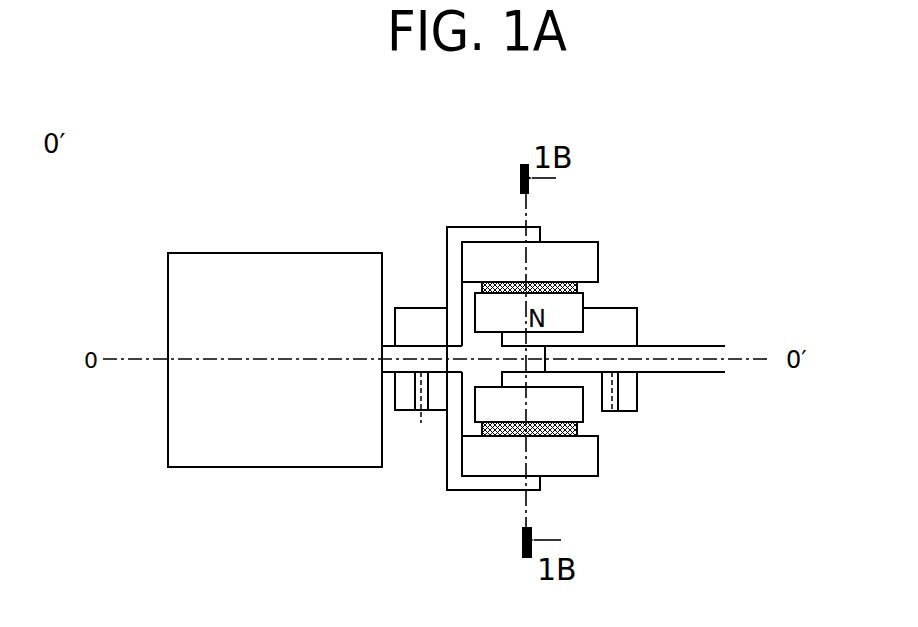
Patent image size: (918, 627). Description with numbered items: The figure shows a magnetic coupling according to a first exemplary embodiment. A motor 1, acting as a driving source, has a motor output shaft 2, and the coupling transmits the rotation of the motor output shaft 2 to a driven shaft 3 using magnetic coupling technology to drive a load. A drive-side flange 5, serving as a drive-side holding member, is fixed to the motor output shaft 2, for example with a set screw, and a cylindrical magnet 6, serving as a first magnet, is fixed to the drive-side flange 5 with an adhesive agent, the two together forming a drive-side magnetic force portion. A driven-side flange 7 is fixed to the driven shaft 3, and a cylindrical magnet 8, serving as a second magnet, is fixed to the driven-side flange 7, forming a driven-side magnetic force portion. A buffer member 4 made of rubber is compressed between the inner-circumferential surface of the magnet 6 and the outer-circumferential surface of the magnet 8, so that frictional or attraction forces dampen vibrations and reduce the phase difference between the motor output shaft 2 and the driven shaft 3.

The motor 1 is at (255, 448).
The motor output shaft 2 is at (425, 353).
The driven shaft 3 is at (712, 352).
The buffer member 4 is at (562, 262).
The drive-side flange 5 is at (450, 468).
The cylindrical magnet 6 is at (575, 463).
The driven-side flange 7 is at (610, 315).
The cylindrical magnet 8 is at (572, 413).